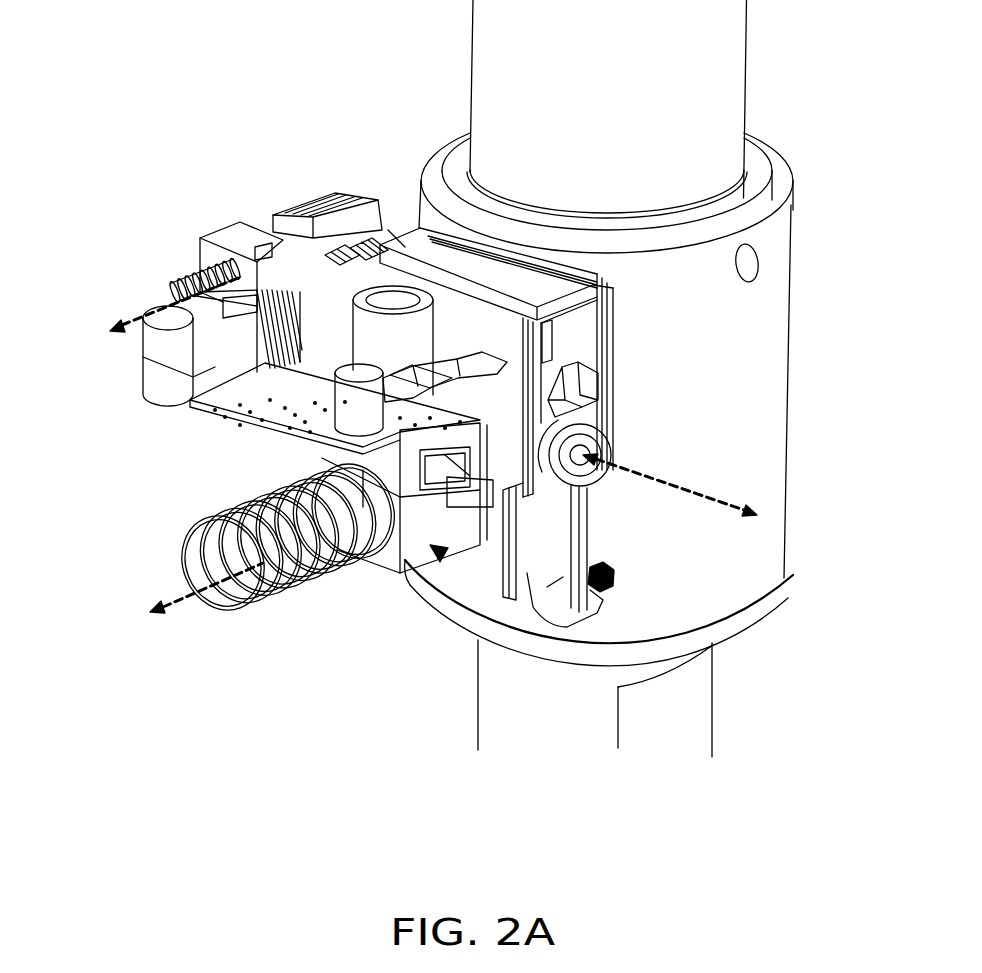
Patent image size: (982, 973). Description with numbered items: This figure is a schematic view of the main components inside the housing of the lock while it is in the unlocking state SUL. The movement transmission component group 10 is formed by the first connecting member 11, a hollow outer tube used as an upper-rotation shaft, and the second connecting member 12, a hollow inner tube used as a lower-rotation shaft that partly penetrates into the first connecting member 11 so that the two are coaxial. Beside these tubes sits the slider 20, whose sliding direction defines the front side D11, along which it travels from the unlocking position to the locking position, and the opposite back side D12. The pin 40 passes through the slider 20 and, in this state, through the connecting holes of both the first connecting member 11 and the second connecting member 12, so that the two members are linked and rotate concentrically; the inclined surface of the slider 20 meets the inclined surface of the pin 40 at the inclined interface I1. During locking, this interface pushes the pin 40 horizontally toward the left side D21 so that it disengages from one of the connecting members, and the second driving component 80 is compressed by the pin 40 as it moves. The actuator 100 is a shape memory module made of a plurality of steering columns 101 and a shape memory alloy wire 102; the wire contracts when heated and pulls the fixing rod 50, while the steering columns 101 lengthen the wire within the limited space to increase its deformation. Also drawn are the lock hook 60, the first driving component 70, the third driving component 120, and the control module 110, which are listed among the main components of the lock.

The transmission component group 10 is at (887, 472).
The first connecting member 11 is at (767, 543).
The second connecting member 12 is at (711, 723).
The slider 20 is at (535, 598).
The pin 40 is at (360, 570).
The fixing rod 50 is at (255, 245).
The lock hook 60 is at (373, 198).
The first driving component 70 is at (300, 275).
The second driving component 80 is at (238, 607).
The actuator 100 is at (10, 398).
The steering column 101 is at (162, 338).
The shape memory alloy wire 102 is at (197, 378).
The control module 110 is at (297, 441).
The third driving component 120 is at (196, 270).
The inclined interface I1 is at (447, 593).
The front side D11 is at (590, 453).
The back side D12 is at (755, 512).
The left side D21 is at (117, 328).
The unlocking state SUL is at (912, 779).